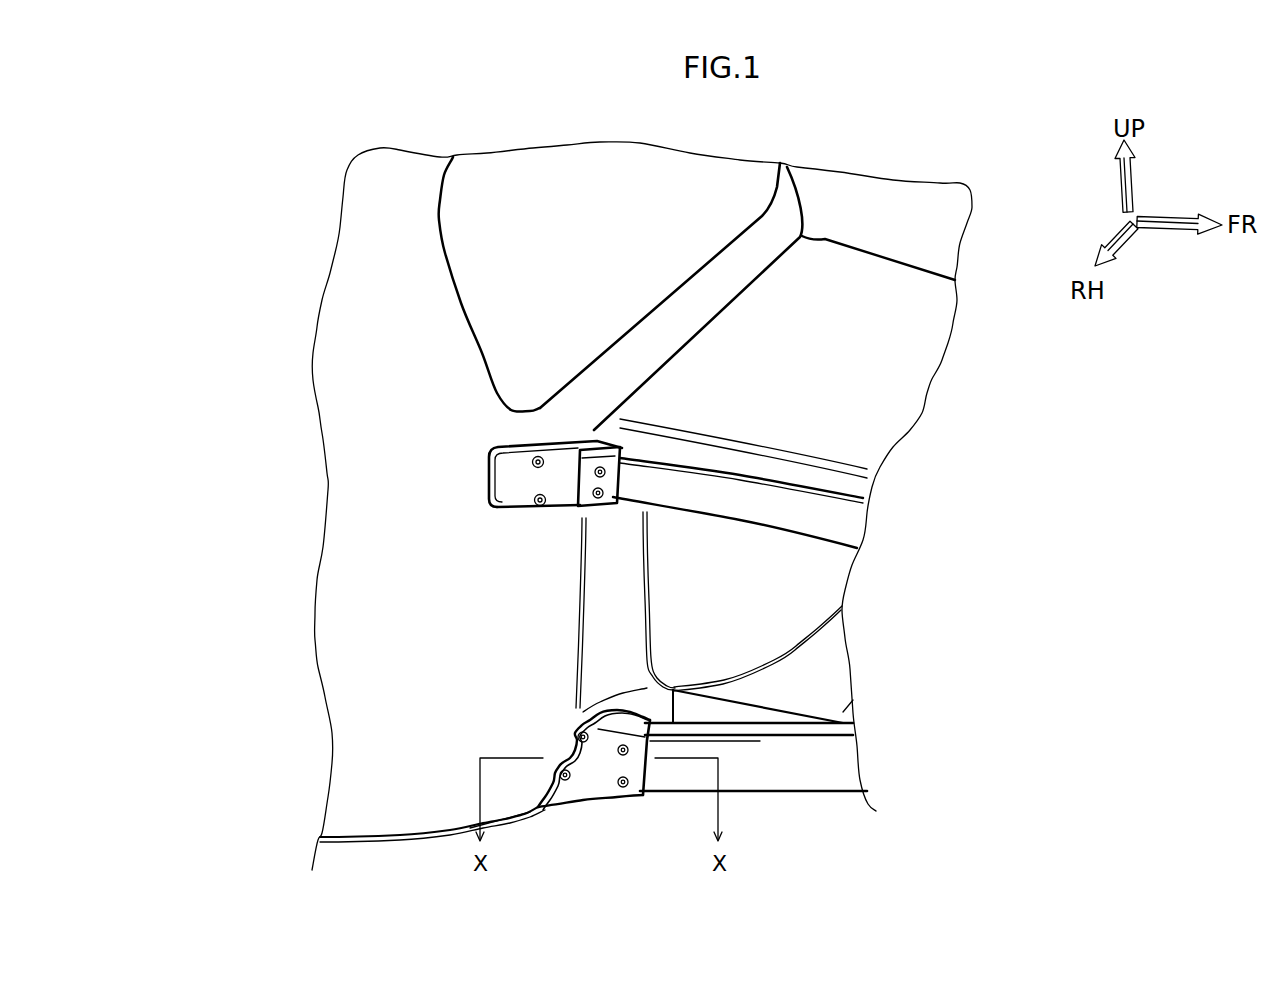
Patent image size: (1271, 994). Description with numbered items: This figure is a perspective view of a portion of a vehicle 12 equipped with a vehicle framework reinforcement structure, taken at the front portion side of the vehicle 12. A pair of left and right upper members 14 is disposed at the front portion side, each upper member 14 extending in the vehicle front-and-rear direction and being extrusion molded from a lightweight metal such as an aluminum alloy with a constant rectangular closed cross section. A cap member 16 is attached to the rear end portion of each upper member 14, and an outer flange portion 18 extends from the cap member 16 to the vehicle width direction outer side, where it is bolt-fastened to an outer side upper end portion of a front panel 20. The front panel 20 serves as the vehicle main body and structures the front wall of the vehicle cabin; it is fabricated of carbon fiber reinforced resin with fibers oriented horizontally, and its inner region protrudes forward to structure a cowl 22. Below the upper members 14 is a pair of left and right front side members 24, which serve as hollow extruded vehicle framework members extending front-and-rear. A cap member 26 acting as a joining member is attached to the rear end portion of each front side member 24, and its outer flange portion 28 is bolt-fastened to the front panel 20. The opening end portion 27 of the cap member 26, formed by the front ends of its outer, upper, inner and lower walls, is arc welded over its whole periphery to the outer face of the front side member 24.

The vehicle 12 is at (856, 220).
The upper member 14 is at (737, 500).
The cap member 16 is at (607, 455).
The outer flange portion 18 is at (507, 482).
The front panel 20 is at (528, 428).
The cowl 22 is at (733, 320).
The front side member 24 is at (825, 767).
The cap member 26 is at (598, 787).
The opening end portion 27 is at (648, 767).
The outer flange portion 28 is at (573, 757).